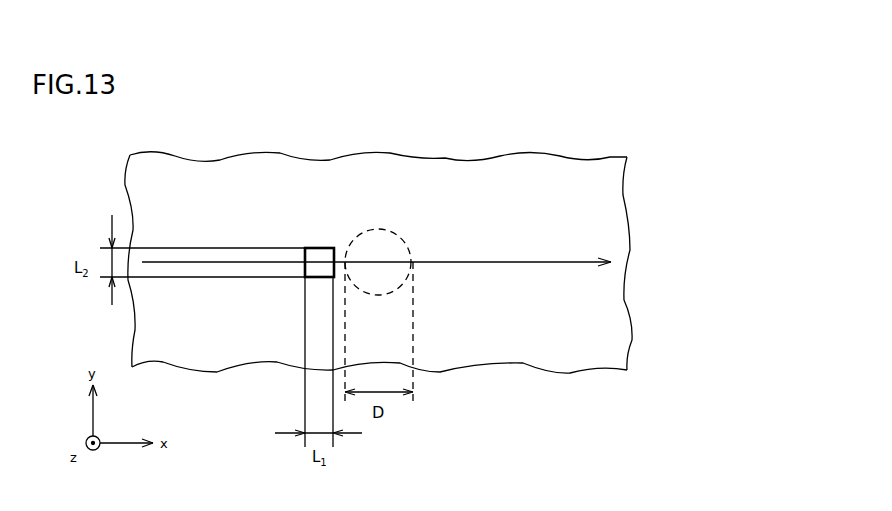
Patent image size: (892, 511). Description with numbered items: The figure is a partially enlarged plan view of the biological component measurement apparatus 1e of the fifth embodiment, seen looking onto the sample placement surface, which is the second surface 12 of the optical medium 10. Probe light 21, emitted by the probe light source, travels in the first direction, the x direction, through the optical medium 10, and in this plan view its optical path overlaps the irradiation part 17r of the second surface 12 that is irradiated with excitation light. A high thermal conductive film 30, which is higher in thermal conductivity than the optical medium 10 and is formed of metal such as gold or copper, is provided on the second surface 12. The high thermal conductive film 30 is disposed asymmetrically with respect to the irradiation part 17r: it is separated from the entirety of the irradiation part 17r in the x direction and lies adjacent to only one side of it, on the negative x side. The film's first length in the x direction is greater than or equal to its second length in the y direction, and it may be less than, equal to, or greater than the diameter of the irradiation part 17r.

The biological component measurement apparatus 1e is at (640, 149).
The probe light 21 is at (181, 262).
The high thermal conductive film 30 is at (316, 248).
The irradiation part 17r is at (372, 229).
The optical medium 10 is at (166, 368).
The second surface 12 is at (583, 340).